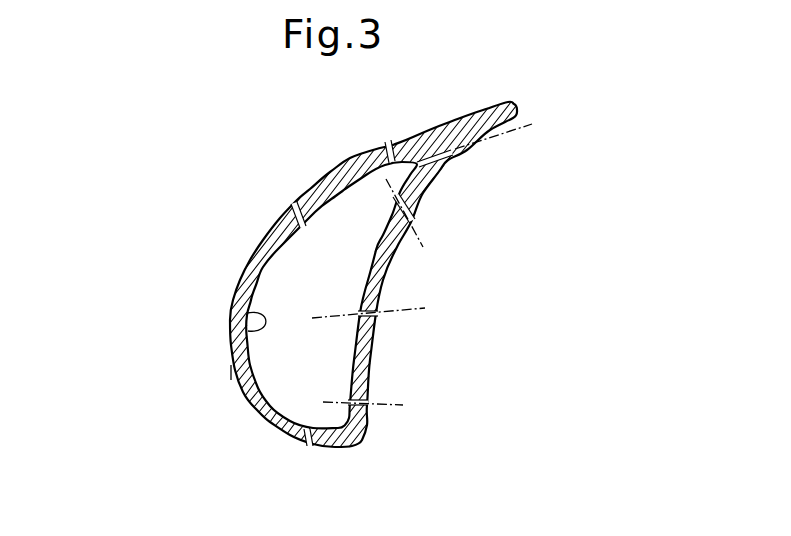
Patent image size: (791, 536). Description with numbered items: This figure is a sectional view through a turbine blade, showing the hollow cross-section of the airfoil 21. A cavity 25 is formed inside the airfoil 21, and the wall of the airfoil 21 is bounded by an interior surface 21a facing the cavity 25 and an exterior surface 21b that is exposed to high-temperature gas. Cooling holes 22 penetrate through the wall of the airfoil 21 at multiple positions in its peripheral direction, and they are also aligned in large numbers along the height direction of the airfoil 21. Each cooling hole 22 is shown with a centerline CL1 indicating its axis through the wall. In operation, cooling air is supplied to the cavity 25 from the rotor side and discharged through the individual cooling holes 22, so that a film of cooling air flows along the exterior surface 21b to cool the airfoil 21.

The airfoil 21 is at (250, 242).
The interior surface 21a is at (247, 313).
The exterior surface 21b is at (232, 372).
The cooling hole 22 is at (400, 164).
The cavity 25 is at (292, 378).
The center line CL1 is at (448, 266).